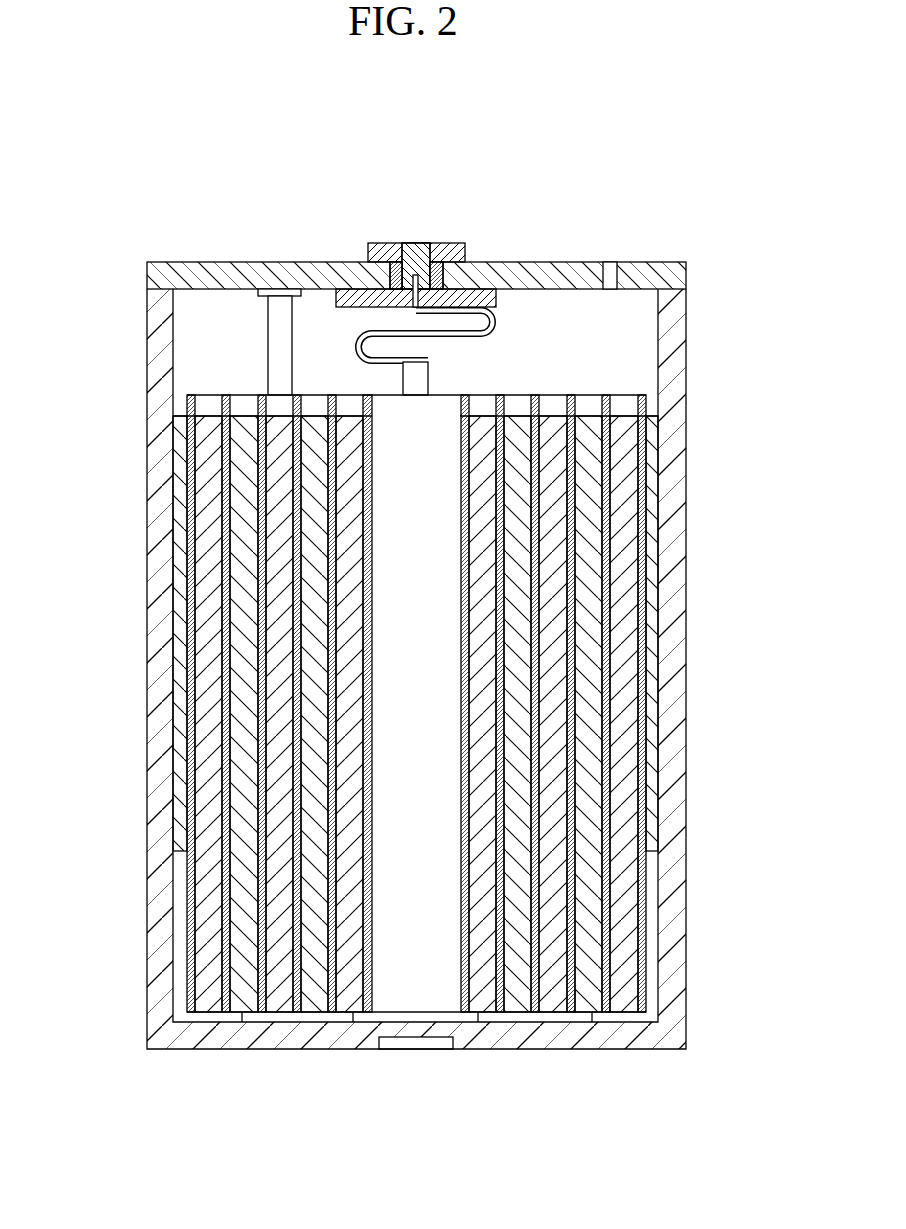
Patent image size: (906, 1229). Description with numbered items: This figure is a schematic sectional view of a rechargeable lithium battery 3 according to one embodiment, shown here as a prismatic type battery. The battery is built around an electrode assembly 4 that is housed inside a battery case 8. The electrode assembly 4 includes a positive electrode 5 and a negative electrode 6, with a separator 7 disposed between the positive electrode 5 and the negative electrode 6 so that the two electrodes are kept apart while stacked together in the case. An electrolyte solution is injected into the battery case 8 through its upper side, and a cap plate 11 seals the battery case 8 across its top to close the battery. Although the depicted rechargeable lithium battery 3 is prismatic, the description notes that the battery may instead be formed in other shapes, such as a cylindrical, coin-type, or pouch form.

The rechargeable lithium battery 3 is at (644, 232).
The electrode assembly 4 is at (412, 665).
The positive electrode 5 is at (622, 890).
The negative electrode 6 is at (245, 880).
The separator 7 is at (225, 930).
The battery case 8 is at (162, 358).
The cap plate 11 is at (548, 272).